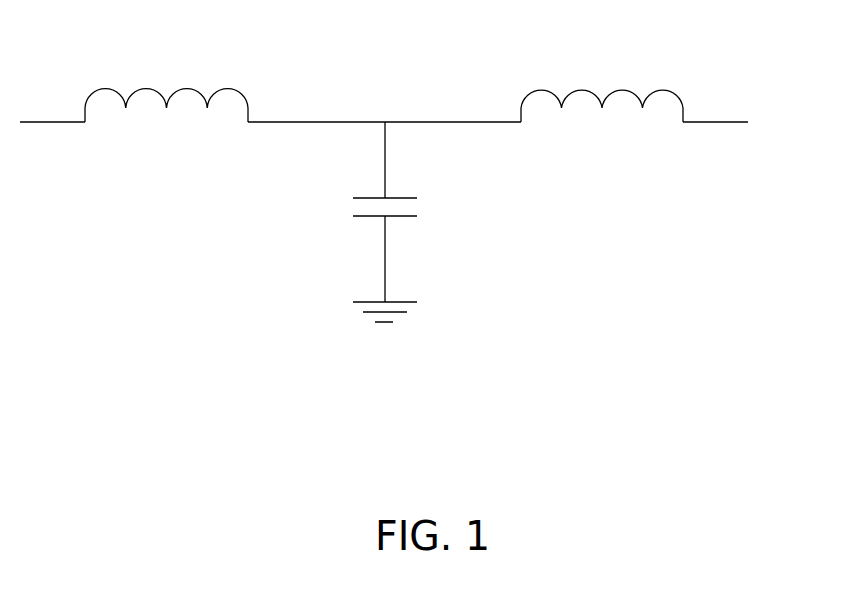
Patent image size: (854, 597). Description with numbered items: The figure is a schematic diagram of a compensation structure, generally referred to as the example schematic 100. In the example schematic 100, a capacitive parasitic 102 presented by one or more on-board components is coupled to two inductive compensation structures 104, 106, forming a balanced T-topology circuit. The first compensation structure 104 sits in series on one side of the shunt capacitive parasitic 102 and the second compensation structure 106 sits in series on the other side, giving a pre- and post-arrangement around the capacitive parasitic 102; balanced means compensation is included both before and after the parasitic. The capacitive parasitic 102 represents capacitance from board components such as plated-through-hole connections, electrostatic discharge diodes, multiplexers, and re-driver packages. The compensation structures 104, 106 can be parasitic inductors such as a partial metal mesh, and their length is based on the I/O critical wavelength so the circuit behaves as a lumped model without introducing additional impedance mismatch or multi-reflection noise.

The example schematic 100 is at (384, 263).
The capacitive parasitic 102 is at (360, 217).
The inductive compensation structure L1 104 is at (133, 92).
The inductive compensation structure L2 106 is at (663, 88).